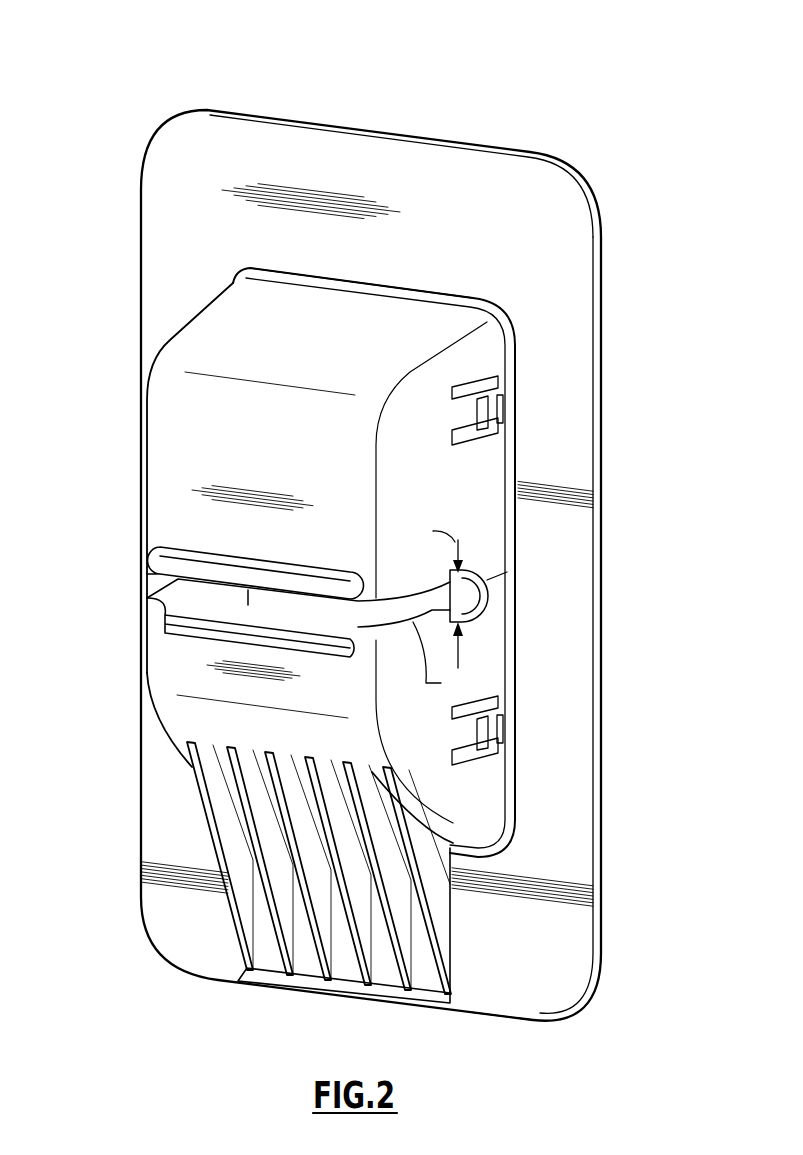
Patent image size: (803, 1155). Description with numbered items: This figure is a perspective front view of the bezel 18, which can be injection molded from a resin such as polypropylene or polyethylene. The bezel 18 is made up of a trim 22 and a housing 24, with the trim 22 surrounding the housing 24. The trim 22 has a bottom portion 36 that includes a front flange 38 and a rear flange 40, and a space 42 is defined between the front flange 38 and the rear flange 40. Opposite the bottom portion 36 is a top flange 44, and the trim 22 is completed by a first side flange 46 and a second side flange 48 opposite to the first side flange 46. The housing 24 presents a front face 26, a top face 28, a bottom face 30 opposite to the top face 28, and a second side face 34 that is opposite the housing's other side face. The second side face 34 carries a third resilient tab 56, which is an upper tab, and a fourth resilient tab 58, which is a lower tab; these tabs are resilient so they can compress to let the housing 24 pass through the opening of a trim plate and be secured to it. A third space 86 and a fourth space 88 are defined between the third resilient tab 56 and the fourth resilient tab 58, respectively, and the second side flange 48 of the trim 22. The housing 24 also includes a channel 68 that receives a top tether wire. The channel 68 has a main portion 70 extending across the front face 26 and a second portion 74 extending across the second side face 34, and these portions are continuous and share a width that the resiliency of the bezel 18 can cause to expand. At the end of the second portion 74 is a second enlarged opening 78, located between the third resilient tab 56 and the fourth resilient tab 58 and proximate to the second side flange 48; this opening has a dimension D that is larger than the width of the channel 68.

The bezel 18 is at (606, 63).
The trim 22 is at (570, 247).
The housing 24 is at (422, 313).
The front face 26 is at (185, 507).
The top face 28 is at (337, 313).
The bottom face 30 is at (301, 876).
The second side face 34 is at (485, 538).
The bottom portion 36 is at (138, 951).
The front flange 38 is at (245, 930).
The rear flange 40 is at (500, 996).
The space 42 is at (470, 937).
The top flange 44 is at (266, 134).
The first side flange 46 is at (160, 317).
The second side flange 48 is at (570, 601).
The third resilient tab 56 is at (498, 397).
The fourth resilient tab 58 is at (500, 714).
The channel 68 is at (223, 590).
The main portion 70 is at (280, 597).
The second portion 74 is at (441, 660).
The second enlarged opening 78 is at (467, 588).
The third space 86 is at (503, 408).
The fourth space 88 is at (503, 728).